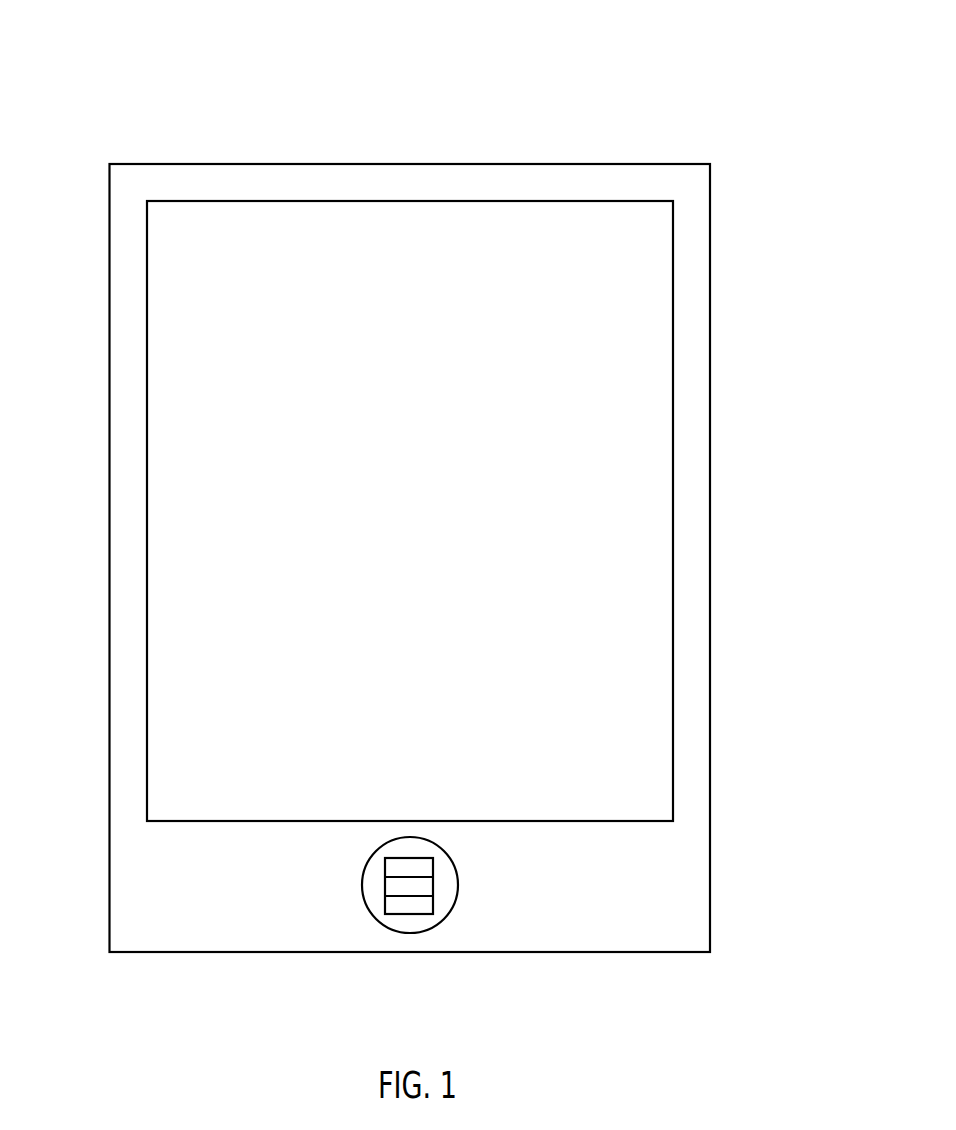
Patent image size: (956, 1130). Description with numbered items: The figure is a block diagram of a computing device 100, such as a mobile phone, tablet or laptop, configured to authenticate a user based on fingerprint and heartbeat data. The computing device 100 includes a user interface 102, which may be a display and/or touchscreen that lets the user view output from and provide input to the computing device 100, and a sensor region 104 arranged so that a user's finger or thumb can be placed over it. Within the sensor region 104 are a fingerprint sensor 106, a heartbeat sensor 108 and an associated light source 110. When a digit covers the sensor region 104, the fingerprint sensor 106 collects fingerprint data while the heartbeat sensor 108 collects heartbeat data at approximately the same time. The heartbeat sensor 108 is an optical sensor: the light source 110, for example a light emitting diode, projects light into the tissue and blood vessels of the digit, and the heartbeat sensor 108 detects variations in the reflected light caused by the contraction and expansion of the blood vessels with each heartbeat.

The computing device 100 is at (823, 109).
The user interface 102 is at (146, 333).
The sensor region 104 is at (445, 912).
The fingerprint sensor 106 is at (385, 867).
The heartbeat sensor 108 is at (433, 886).
The light source 110 is at (385, 905).